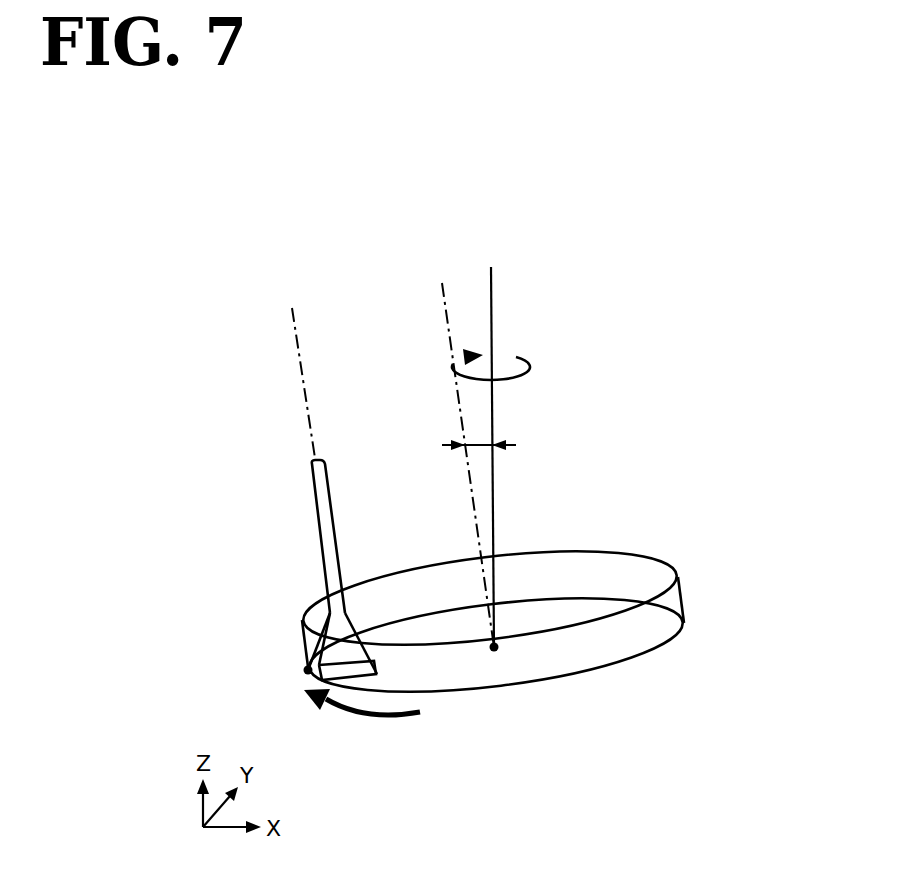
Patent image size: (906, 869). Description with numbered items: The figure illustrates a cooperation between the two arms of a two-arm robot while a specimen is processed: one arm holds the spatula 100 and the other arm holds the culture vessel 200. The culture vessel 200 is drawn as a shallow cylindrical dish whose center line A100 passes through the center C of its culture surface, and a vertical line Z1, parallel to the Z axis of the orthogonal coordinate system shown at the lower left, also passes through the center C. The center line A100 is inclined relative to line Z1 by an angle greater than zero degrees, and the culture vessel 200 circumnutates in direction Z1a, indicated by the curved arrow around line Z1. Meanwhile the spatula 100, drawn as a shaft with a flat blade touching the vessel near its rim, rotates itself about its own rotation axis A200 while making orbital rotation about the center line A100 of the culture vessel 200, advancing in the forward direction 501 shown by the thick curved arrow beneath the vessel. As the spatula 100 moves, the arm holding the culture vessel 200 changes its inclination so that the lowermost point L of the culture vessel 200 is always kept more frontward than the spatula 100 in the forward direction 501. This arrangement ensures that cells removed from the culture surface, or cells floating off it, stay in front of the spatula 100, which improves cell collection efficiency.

The spatula 100 is at (298, 522).
The culture vessel 200 is at (690, 570).
The forward direction 501 is at (350, 714).
The center line of the culture vessel A100 is at (451, 342).
The rotation axis A200 is at (298, 345).
The line Z1 is at (491, 295).
The direction Z1a is at (505, 356).
The lowermost point of the culture vessel L is at (304, 669).
The center of the culture surface C is at (499, 650).